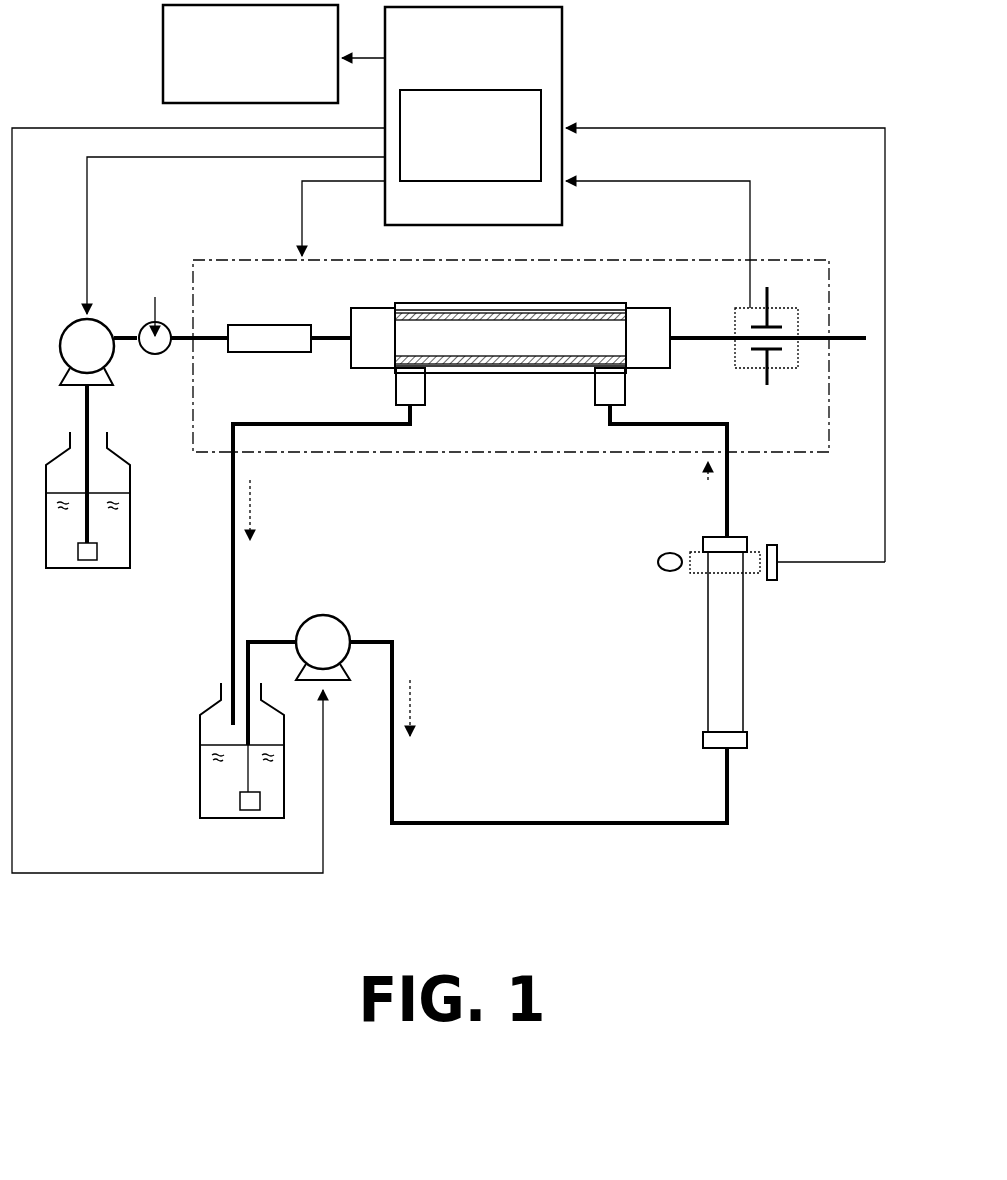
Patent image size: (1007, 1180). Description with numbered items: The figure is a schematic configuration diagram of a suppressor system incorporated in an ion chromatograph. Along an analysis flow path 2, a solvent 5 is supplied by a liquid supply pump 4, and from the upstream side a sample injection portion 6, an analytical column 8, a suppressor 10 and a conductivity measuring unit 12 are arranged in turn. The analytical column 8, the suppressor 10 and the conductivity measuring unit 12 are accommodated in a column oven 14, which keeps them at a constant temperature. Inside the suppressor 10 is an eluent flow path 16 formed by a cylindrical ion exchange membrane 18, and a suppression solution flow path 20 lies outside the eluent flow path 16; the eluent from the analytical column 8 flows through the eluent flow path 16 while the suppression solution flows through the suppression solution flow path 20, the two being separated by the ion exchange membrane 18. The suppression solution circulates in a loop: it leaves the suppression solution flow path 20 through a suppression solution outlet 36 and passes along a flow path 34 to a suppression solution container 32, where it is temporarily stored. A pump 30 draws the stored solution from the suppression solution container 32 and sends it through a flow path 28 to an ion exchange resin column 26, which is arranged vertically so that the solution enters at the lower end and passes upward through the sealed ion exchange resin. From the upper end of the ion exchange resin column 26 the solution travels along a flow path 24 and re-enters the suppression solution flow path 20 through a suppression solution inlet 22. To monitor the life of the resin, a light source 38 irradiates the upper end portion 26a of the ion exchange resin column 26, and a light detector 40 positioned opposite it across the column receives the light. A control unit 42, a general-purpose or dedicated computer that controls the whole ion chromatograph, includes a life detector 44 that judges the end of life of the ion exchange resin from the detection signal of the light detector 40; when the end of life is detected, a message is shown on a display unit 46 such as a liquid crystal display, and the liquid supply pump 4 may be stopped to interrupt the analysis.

The analysis flow path 2 is at (326, 335).
The liquid supply pump 4 is at (70, 326).
The solvent 5 is at (108, 570).
The sample injection portion 6 is at (148, 323).
The analytical column 8 is at (278, 323).
The suppressor 10 is at (510, 324).
The conductivity measuring unit 12 is at (775, 370).
The column oven 14 is at (808, 260).
The eluent flow path 16 is at (530, 338).
The ion exchange membrane 18 is at (492, 370).
The suppression solution flow path 20 is at (459, 370).
The suppression solution inlet 22 is at (626, 386).
The flow path 24 is at (735, 478).
The ion exchange resin column 26 is at (727, 642).
The upper end portion 26a is at (690, 578).
The flow path 28 is at (525, 820).
The pump 30 is at (340, 617).
The suppression solution container 32 is at (198, 790).
The flow path 34 is at (238, 572).
The suppression solution outlet 36 is at (395, 386).
The light source 38 is at (662, 553).
The light detector 40 is at (778, 578).
The control unit 42 is at (562, 47).
The life detector 44 is at (541, 101).
The display unit 46 is at (163, 47).